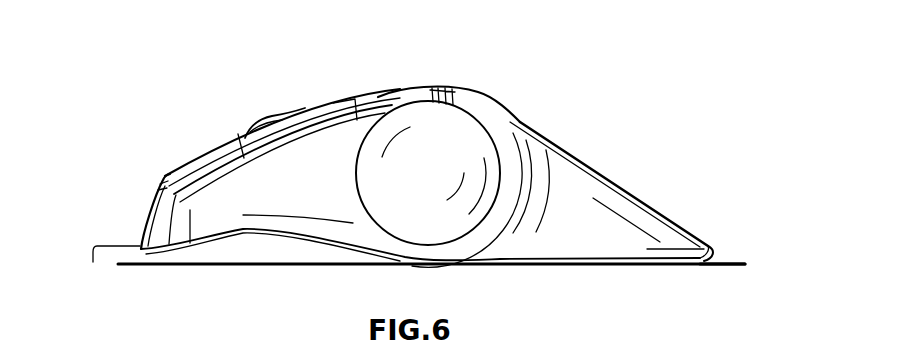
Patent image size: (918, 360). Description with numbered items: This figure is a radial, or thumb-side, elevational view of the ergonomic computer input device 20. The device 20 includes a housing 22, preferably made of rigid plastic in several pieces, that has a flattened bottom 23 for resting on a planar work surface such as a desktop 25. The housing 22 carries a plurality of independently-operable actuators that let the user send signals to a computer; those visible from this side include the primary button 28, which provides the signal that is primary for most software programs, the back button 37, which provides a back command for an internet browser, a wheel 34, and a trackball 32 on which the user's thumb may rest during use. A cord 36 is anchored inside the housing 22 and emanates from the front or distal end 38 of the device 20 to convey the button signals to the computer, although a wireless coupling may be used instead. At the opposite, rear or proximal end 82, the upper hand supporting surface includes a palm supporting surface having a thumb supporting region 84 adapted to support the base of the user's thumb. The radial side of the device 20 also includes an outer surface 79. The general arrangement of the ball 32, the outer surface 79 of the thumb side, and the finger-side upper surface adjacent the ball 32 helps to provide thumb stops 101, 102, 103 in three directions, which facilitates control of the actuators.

The ergonomic computer input device 20 is at (528, 62).
The housing 22 is at (560, 172).
The flattened bottom 23 is at (618, 266).
The desktop 25 is at (735, 264).
The primary button 28 is at (200, 163).
The trackball 32 is at (422, 138).
The wheel 34 is at (278, 115).
The cord 36 is at (105, 246).
The back button 37 is at (334, 103).
The front or distal end 38 is at (140, 238).
The outer surface 79 is at (330, 213).
The rear or proximal end 82 is at (712, 246).
The thumb supporting region 84 is at (627, 243).
The thumb stop 101 is at (455, 96).
The thumb stop 102 is at (446, 252).
The thumb stop 103 is at (505, 168).